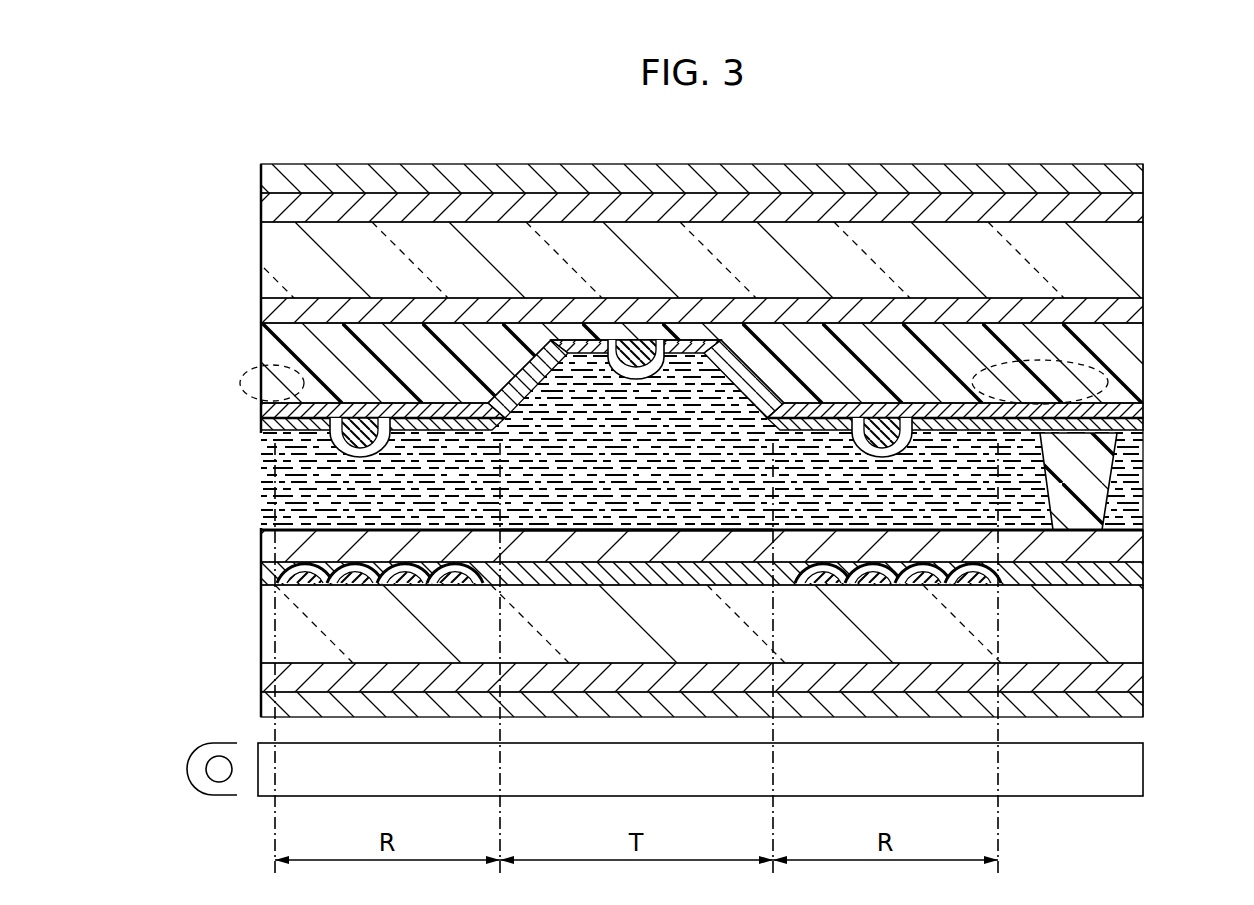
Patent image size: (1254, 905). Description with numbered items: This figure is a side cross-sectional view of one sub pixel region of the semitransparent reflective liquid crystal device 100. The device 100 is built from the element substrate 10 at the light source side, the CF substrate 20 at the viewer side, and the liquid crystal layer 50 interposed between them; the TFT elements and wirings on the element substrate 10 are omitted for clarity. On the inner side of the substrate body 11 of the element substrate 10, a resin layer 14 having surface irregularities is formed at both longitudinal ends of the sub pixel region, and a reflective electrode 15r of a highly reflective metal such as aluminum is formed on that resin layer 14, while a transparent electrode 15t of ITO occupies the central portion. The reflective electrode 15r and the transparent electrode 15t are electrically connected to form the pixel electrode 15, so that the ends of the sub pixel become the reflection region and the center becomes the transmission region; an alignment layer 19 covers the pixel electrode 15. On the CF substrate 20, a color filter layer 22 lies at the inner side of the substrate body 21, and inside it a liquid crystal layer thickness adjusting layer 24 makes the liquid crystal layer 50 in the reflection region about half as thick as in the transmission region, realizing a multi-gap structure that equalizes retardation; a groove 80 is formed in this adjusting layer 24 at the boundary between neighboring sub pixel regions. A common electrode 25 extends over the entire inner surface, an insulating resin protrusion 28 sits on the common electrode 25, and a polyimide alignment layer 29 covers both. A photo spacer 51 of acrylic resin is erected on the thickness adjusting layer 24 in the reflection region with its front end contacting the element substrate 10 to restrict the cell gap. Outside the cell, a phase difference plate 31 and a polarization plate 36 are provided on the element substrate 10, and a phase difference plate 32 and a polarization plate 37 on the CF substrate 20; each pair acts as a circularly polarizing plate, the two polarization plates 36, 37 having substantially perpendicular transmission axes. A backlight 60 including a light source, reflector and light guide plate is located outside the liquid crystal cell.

The liquid crystal device 100 is at (1048, 140).
The CF substrate 20 is at (252, 433).
The element substrate 10 is at (252, 722).
The polarization plate 37 is at (1140, 187).
The phase difference plate 32 is at (1140, 212).
The substrate body 21 is at (1140, 262).
The color filter layer 22 is at (1140, 312).
The liquid crystal layer thickness adjusting layer 24 is at (1140, 350).
The groove 80 is at (250, 368).
The common electrode 25 is at (1140, 411).
The alignment layer 29 is at (1140, 431).
The protrusion 28 is at (632, 360).
The liquid crystal layer 50 is at (258, 470).
The photo spacer 51 is at (1105, 492).
The pixel electrode 15 is at (680, 557).
The transparent electrode 15t is at (527, 563).
The reflective electrode 15r is at (1003, 568).
The alignment layer 19 is at (1140, 576).
The resin layer 14 is at (1008, 558).
The substrate body 11 is at (1140, 634).
The phase difference plate 31 is at (1140, 682).
The polarization plate 36 is at (1140, 707).
The backlight 60 is at (1145, 772).